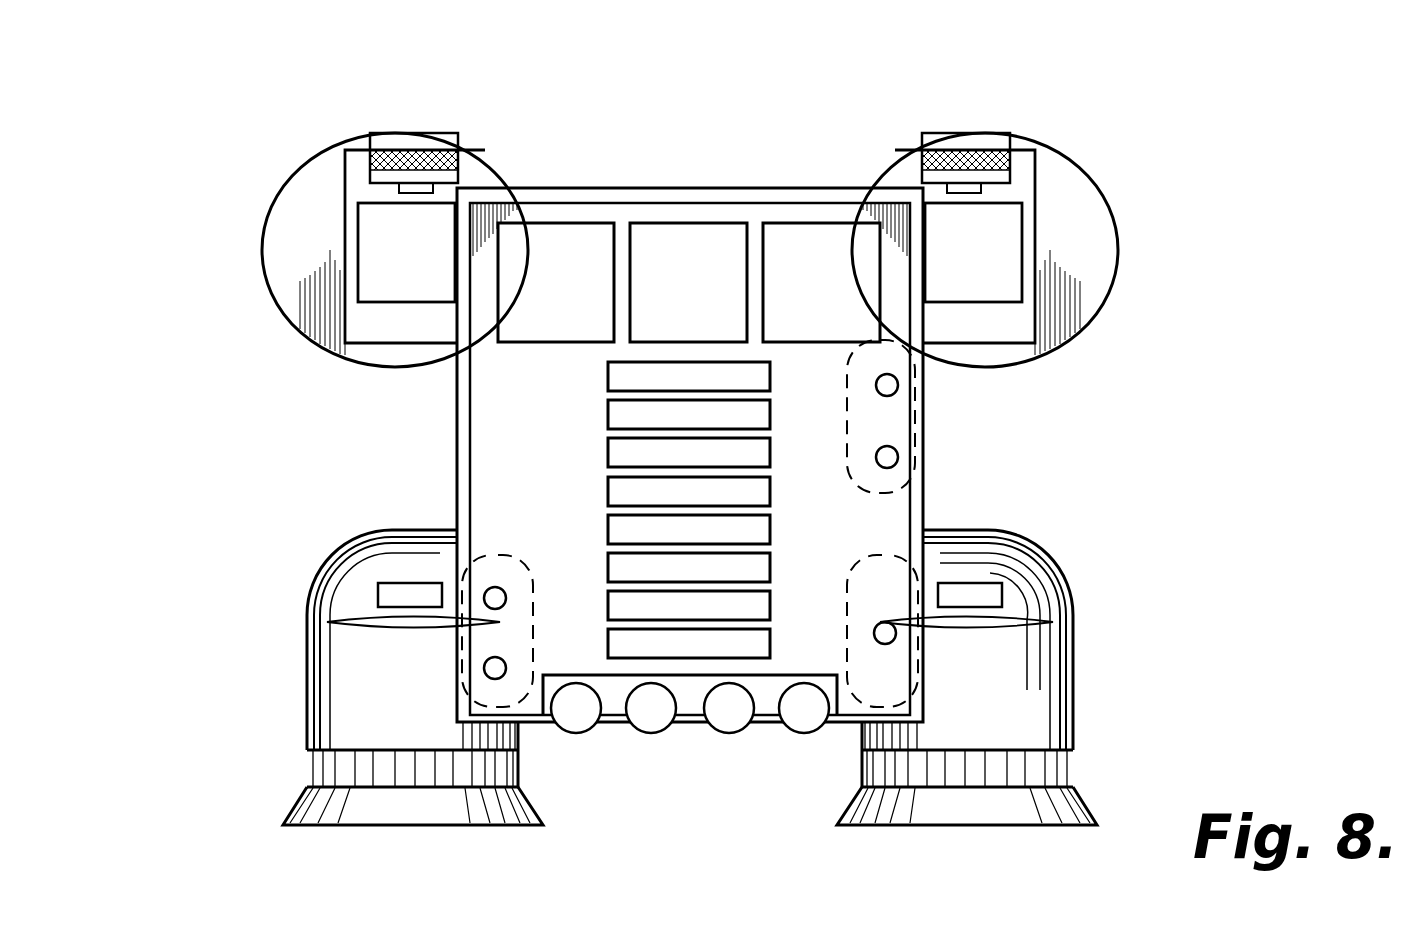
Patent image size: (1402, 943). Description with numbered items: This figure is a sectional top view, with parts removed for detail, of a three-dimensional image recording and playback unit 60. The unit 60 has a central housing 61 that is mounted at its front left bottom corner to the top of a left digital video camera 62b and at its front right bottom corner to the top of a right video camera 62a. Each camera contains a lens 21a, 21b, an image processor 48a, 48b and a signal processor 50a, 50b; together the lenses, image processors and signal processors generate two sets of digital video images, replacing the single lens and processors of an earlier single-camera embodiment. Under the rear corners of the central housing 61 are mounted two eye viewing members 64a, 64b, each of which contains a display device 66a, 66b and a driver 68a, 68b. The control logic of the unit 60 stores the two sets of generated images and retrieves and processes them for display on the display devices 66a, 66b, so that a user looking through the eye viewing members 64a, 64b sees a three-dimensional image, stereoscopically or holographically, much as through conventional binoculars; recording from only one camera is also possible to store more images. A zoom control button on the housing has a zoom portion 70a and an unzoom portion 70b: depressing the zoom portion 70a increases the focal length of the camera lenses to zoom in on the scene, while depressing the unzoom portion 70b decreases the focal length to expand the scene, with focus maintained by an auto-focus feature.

The three-dimensional image recording and playback unit 60 is at (1163, 145).
The central housing 61 is at (457, 455).
The right video camera 62a is at (1117, 288).
The left digital video camera 62b is at (263, 288).
The lens 21a is at (977, 133).
The lens 21b is at (403, 133).
The image processor 48a is at (922, 158).
The image processor 48b is at (458, 158).
The signal processor 50a is at (1010, 179).
The signal processor 50b is at (370, 179).
The eye viewing member 64a is at (1073, 698).
The eye viewing member 64b is at (307, 698).
The display device 66a is at (1073, 607).
The display device 66b is at (350, 613).
The driver 68a is at (1003, 583).
The driver 68b is at (395, 582).
The zoom portion 70a is at (898, 385).
The unzoom portion 70b is at (898, 457).